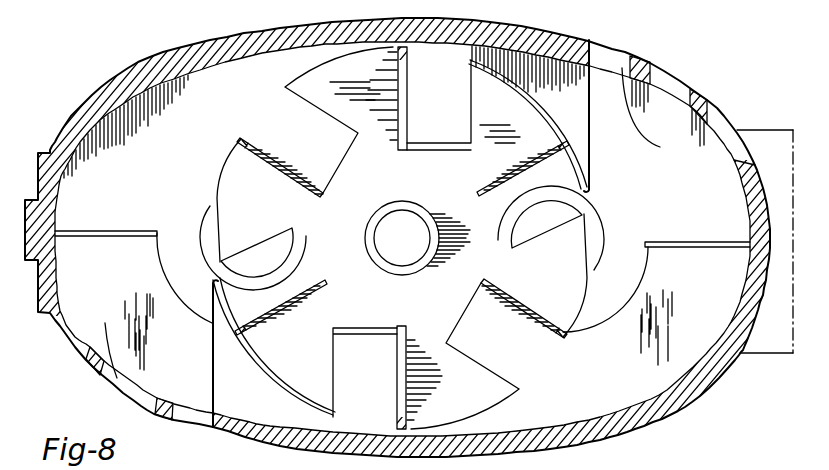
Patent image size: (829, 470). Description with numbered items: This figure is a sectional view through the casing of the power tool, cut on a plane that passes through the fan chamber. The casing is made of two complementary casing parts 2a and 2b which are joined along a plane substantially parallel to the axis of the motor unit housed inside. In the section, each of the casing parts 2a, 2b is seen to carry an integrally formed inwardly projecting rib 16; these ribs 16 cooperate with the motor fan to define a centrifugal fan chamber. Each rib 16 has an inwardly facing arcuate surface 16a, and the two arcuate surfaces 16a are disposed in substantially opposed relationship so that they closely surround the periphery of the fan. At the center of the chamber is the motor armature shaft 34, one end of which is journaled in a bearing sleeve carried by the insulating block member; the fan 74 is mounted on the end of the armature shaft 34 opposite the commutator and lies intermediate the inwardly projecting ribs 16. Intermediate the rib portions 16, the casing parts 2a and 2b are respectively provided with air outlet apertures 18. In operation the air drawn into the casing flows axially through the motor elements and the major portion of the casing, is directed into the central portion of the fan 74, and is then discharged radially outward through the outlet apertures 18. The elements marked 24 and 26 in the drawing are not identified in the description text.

The casing part 2a is at (208, 40).
The casing part 2b is at (663, 419).
The inwardly projecting rib 16 is at (591, 150).
The inwardly facing arcuate surface 16a is at (547, 118).
The air outlet aperture 18 is at (727, 138).
The left scoop ring 24 is at (215, 207).
The right scoop ring 26 is at (598, 213).
The motor armature shaft 34 is at (428, 215).
The fan 74 is at (584, 294).